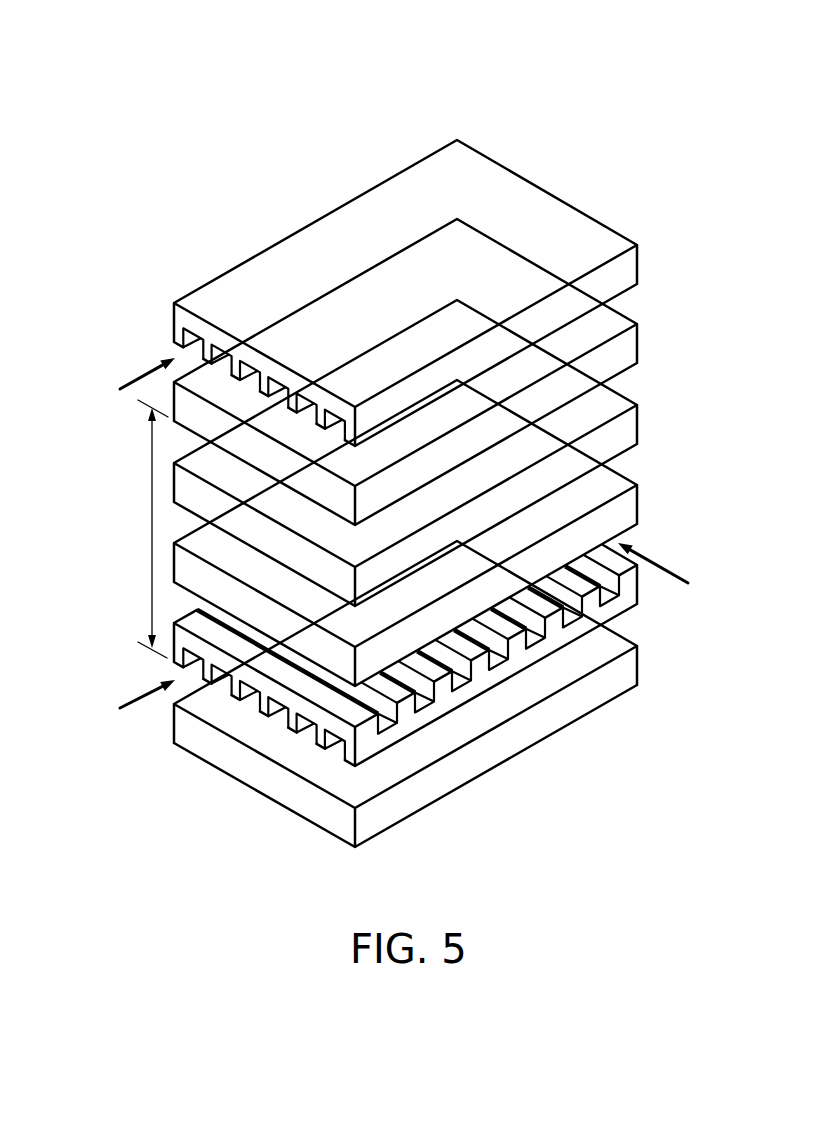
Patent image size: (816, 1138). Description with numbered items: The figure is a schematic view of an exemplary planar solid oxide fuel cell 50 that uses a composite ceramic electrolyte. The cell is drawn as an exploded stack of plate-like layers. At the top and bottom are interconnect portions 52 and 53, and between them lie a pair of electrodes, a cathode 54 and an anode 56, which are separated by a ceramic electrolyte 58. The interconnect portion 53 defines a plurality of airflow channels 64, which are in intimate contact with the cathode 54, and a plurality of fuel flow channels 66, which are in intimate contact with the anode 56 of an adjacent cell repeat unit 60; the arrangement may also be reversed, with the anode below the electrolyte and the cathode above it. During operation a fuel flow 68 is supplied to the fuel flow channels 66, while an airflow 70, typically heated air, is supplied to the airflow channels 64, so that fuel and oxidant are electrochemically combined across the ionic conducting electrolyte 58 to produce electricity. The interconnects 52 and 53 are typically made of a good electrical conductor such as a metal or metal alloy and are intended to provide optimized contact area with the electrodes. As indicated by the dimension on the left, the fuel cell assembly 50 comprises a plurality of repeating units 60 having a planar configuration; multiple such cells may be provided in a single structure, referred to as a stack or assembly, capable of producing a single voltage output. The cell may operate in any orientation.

The planar fuel cell 50 is at (136, 68).
The interconnect portion 52 is at (638, 262).
The anode 56 is at (638, 341).
The ceramic electrolyte 58 is at (638, 424).
The cathode 54 is at (638, 503).
The interconnect portion 53 is at (442, 655).
The airflow channels 64 is at (607, 583).
The fuel flow channels 66 is at (138, 377).
The fuel flow 68 is at (137, 697).
The airflow 70 is at (675, 568).
The cell repeat unit 60 is at (150, 527).